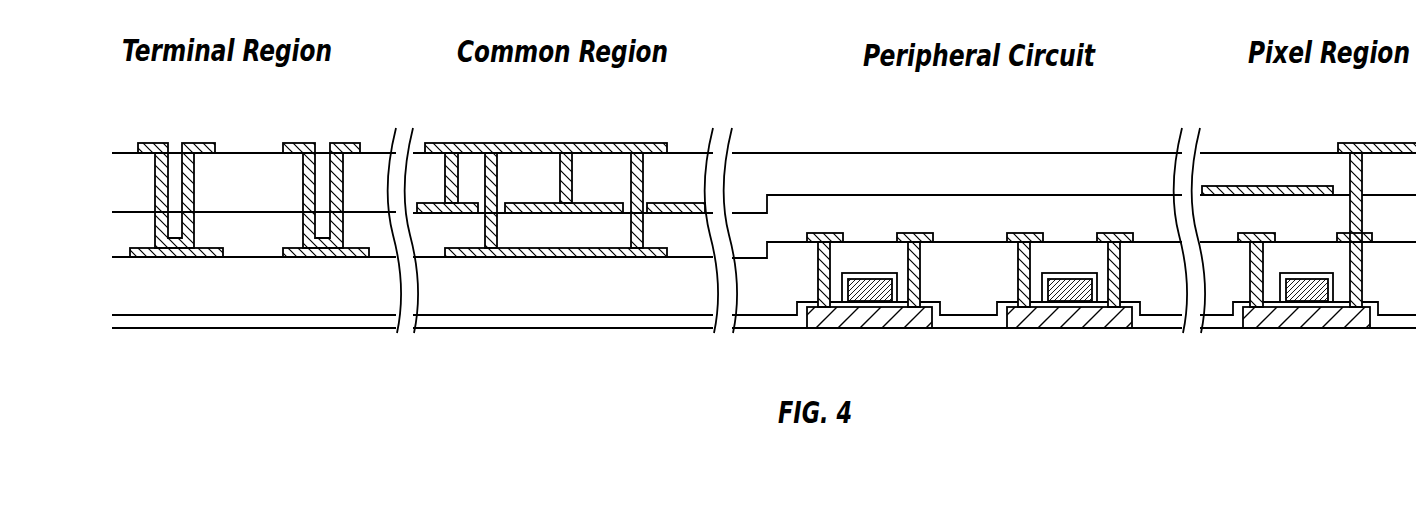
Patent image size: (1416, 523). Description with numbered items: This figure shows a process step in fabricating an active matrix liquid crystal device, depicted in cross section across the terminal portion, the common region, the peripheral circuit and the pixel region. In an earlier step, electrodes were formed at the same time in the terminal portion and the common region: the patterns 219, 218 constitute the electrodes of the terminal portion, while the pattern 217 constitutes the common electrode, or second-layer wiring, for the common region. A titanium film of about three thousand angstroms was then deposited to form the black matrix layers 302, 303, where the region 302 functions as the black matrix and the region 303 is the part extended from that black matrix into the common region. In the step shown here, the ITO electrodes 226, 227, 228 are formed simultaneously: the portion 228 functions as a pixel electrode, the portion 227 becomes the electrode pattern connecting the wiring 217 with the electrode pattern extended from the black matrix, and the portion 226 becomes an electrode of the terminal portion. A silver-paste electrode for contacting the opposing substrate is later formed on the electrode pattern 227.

The ITO electrode 226 is at (197, 147).
The pattern 219 is at (198, 260).
The pattern 218 is at (330, 260).
The ITO electrode 227 is at (455, 150).
The BM layer 303 is at (590, 213).
The pattern 217 is at (590, 258).
The BM layer 302 is at (1233, 186).
The ITO electrode 228 is at (1352, 150).